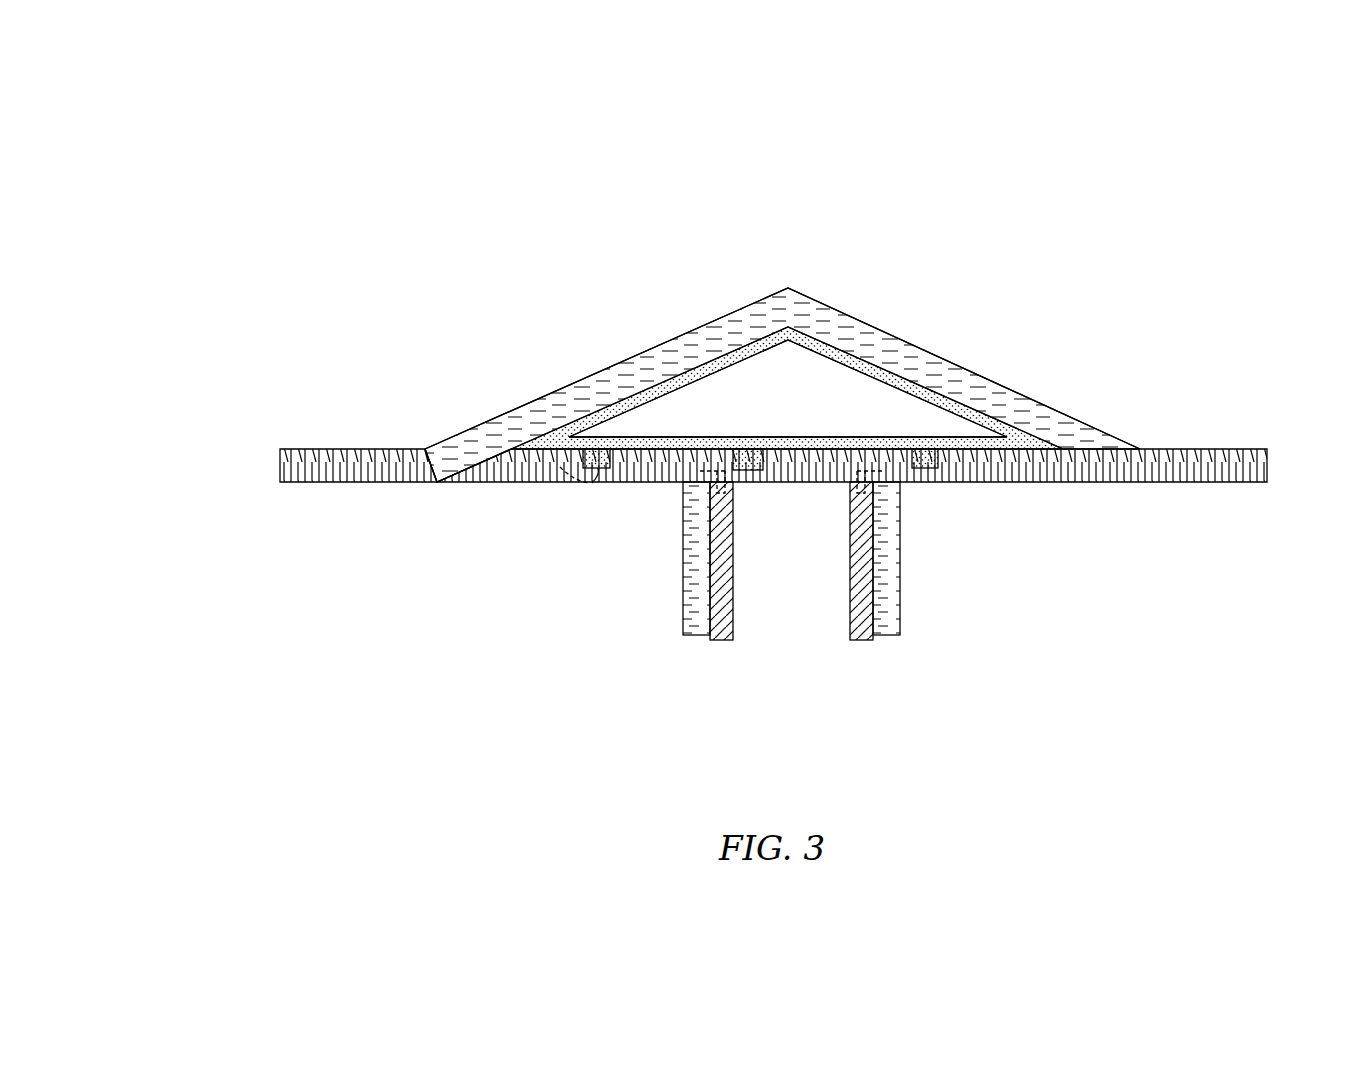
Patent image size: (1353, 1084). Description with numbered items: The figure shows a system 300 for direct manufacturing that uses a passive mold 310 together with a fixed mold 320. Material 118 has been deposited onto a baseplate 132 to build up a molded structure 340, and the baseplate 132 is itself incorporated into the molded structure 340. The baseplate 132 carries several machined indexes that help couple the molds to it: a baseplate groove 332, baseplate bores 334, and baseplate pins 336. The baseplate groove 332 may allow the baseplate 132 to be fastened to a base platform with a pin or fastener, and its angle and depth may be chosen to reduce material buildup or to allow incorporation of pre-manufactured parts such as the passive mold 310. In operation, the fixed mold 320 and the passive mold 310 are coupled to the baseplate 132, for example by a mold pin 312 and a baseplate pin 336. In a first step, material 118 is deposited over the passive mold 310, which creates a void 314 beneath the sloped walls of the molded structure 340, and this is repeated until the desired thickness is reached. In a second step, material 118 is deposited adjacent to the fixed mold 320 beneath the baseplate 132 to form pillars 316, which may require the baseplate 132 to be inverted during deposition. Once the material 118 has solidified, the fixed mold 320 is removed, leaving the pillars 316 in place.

The system 300 is at (430, 182).
The baseplate 132 is at (297, 458).
The baseplate groove 332 is at (408, 452).
The material 118 is at (545, 393).
The molded structure 340 is at (787, 310).
The passive mold 310 is at (1012, 425).
The void 314 is at (805, 383).
The baseplate pin 336 is at (667, 485).
The baseplate bore 334 is at (560, 467).
The mold pin 312 is at (592, 483).
The pillar 316 is at (690, 640).
The fixed mold 320 is at (733, 610).